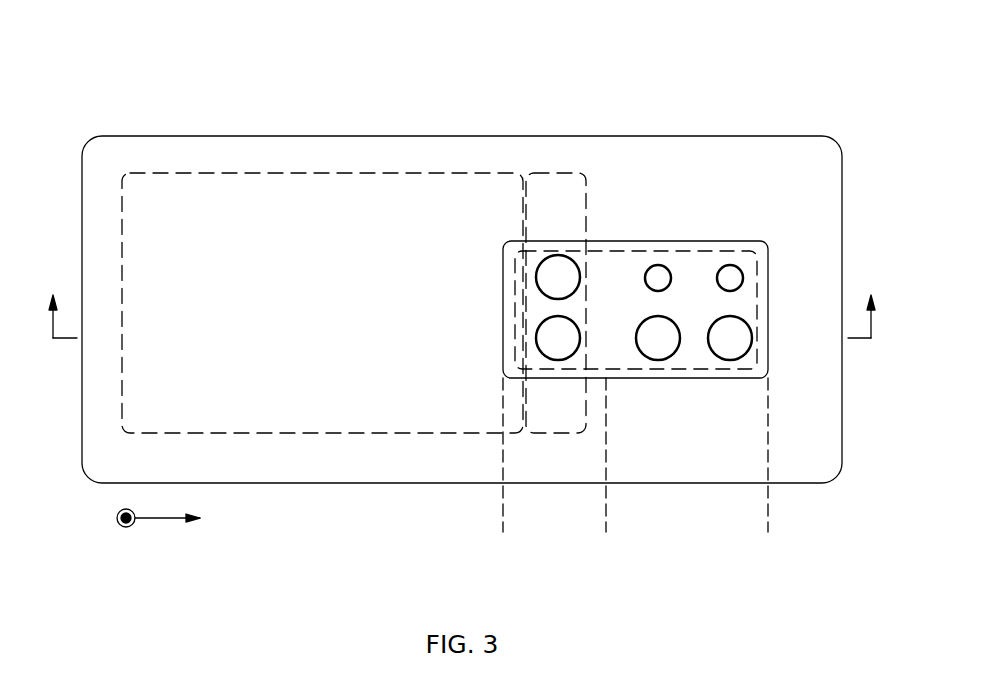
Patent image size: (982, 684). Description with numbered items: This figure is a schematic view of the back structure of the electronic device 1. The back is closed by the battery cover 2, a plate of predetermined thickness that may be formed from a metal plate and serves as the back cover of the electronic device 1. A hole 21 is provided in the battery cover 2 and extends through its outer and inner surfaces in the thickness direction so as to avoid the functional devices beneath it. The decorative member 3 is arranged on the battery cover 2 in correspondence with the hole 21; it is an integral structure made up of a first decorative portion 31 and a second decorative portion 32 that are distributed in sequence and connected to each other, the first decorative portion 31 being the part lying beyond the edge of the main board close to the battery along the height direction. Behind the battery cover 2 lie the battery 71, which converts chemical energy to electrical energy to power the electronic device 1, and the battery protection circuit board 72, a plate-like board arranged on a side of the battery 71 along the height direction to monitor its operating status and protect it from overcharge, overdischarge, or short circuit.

The electronic device 1 is at (463, 301).
The battery cover 2 is at (660, 160).
The hole 21 is at (717, 250).
The decorative member 3 is at (640, 314).
The first decorative portion 31 is at (503, 508).
The second decorative portion 32 is at (687, 459).
The battery 71 is at (322, 173).
The battery protection circuit board 72 is at (552, 173).